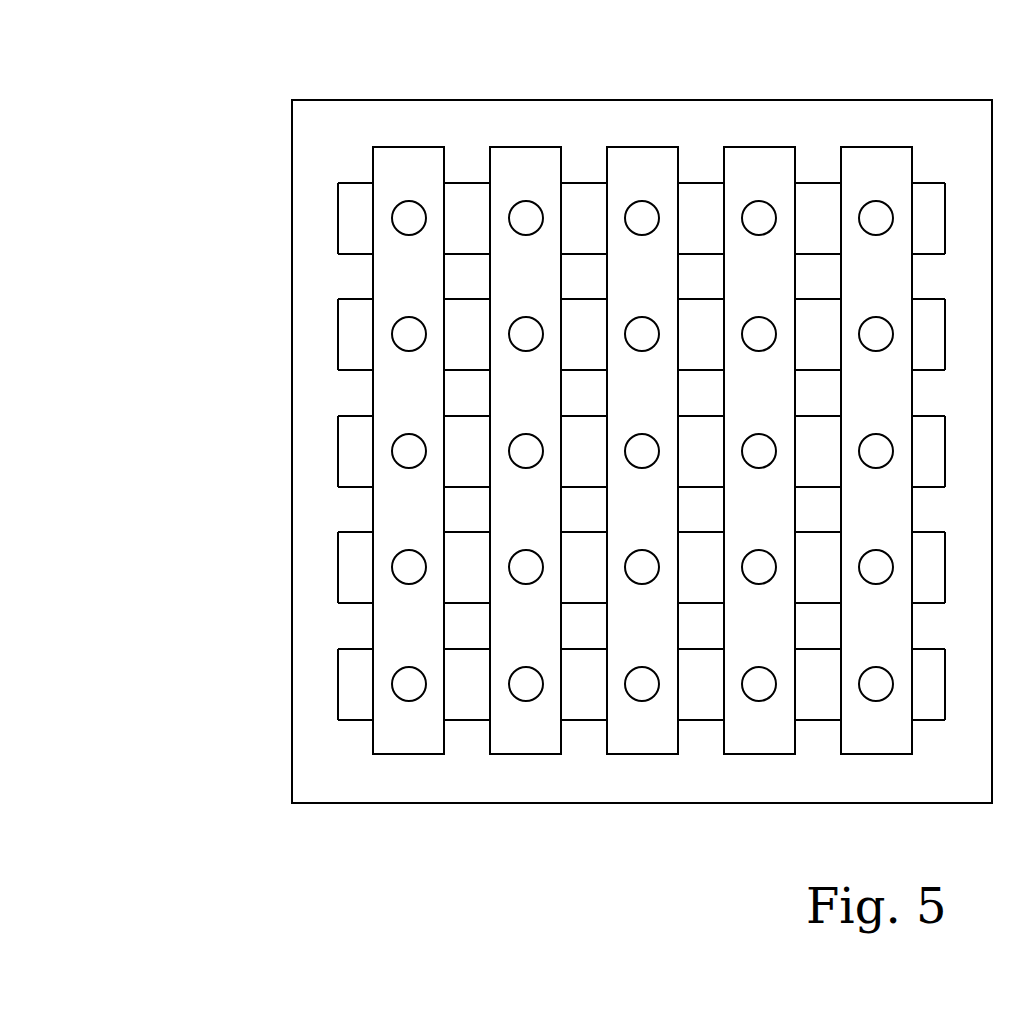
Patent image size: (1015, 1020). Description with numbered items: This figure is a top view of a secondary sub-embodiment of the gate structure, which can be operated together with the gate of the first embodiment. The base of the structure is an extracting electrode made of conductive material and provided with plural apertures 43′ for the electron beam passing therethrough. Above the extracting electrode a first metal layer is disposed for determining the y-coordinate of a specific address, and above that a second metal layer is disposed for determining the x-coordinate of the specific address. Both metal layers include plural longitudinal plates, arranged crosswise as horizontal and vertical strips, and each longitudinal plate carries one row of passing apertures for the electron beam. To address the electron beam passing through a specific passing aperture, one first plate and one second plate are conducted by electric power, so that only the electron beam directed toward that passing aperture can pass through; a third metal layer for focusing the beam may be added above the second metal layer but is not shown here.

The apertures 43′ is at (642, 356).